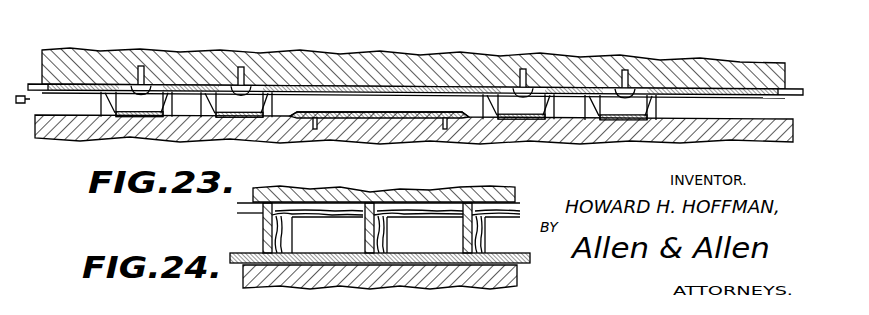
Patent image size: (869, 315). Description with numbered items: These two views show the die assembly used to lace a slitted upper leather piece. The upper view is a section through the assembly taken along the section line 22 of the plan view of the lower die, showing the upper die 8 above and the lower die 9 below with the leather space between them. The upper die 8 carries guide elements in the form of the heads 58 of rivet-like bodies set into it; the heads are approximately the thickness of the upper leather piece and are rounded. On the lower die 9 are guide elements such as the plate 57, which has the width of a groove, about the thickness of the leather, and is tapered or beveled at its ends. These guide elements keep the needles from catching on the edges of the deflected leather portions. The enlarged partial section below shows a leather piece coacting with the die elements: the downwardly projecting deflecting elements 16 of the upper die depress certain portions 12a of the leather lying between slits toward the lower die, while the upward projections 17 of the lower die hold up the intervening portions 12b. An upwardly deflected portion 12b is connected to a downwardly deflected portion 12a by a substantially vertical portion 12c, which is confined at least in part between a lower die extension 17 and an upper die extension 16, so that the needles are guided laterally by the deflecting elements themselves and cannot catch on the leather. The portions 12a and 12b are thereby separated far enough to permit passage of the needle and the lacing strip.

In FIG. 23, the upper die 8 is at (612, 63).
In FIG. 24, the upper die 8 is at (463, 190).
In FIG. 23, the lower die 9 is at (603, 133).
In FIG. 24, the lower die 9 is at (510, 283).
In FIG. 23, the section line 22 is at (32, 80).
In FIG. 23, the plate 57 is at (356, 118).
In FIG. 23, the heads of rivet-like bodies 58 is at (143, 93).
In FIG. 24, the downwardly deflected leather portion 12a is at (302, 255).
In FIG. 24, the upwardly deflected leather portion 12b is at (342, 203).
In FIG. 24, the substantially vertical leather portion 12c is at (381, 243).
In FIG. 24, the deflecting elements of the upper die 16 is at (263, 233).
In FIG. 24, the upward projections of the lower die 17 is at (292, 228).